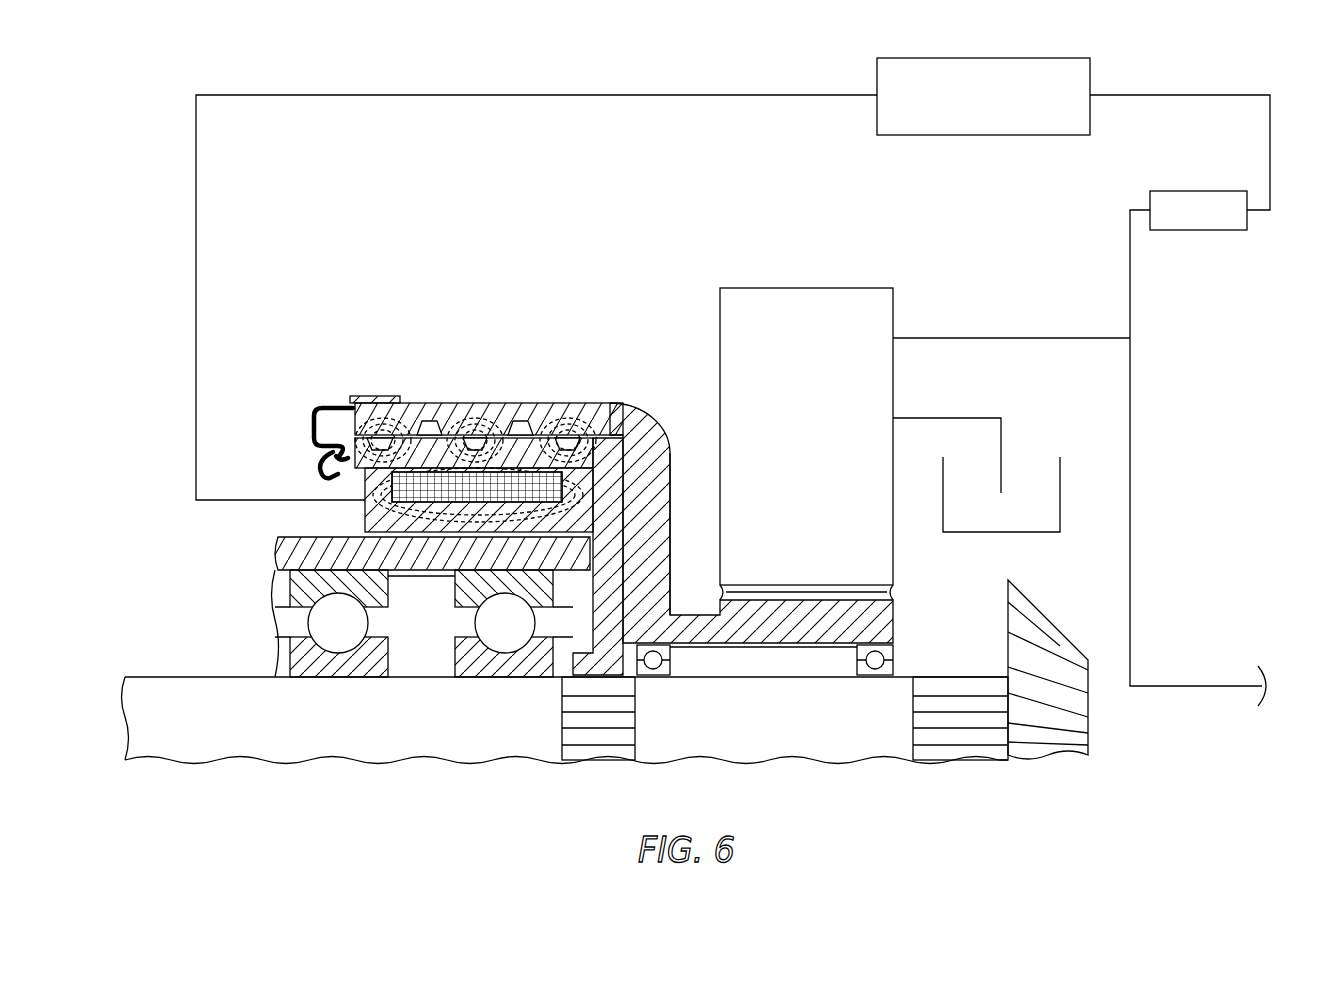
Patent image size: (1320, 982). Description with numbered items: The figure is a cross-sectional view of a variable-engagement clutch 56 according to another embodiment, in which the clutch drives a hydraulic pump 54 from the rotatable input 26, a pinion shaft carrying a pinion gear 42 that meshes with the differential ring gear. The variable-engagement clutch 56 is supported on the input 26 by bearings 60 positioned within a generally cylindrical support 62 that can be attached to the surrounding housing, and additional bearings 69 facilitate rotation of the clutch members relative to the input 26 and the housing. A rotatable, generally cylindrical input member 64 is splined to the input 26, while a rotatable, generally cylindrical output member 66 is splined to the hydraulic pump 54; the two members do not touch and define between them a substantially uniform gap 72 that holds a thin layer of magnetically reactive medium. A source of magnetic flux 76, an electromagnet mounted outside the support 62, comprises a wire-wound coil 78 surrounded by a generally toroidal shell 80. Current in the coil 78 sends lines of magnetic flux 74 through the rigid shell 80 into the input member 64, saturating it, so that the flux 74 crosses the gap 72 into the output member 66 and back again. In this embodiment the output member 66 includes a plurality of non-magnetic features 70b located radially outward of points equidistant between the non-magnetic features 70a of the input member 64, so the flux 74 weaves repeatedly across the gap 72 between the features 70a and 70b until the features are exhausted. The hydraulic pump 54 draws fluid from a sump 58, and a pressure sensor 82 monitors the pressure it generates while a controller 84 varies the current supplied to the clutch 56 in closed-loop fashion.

The controller 84 is at (902, 65).
The pressure sensor 82 is at (1176, 196).
The hydraulic pump 54 is at (824, 452).
The sump 58 is at (1040, 532).
The pinion gear 42 is at (1047, 648).
The input 26 is at (370, 735).
The support 62 is at (283, 562).
The bearings 60 is at (463, 657).
The bearings 69 is at (890, 650).
The input member 64 is at (610, 530).
The output member 66 is at (653, 448).
The gap 72 is at (613, 437).
The non-magnetic features 70a is at (560, 437).
The non-magnetic features 70b is at (474, 381).
The wire-wound coil 78 is at (457, 430).
The lines of magnetic flux 74 is at (480, 420).
The variable-engagement clutch 56 is at (517, 407).
The toroidal shell 80 is at (365, 492).
The source of magnetic flux 76 is at (380, 556).